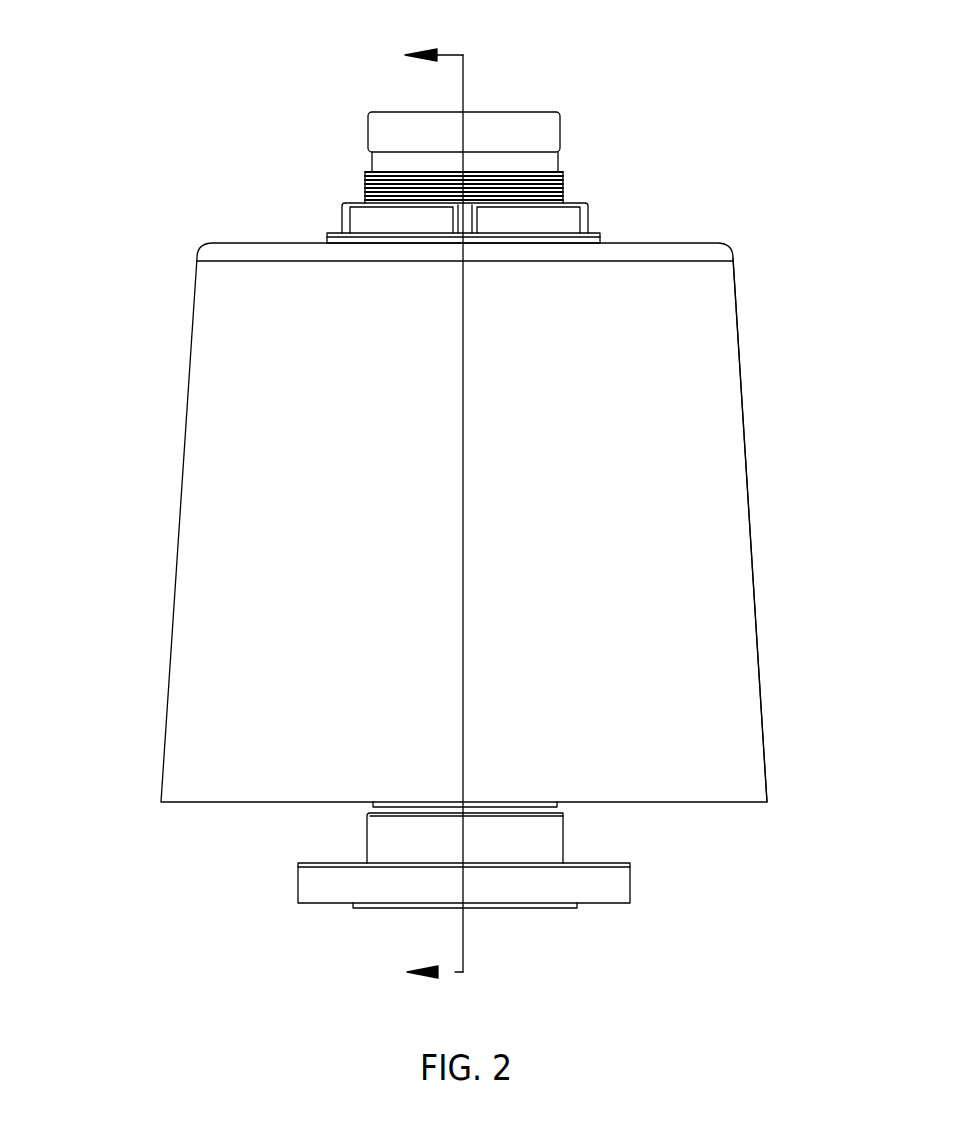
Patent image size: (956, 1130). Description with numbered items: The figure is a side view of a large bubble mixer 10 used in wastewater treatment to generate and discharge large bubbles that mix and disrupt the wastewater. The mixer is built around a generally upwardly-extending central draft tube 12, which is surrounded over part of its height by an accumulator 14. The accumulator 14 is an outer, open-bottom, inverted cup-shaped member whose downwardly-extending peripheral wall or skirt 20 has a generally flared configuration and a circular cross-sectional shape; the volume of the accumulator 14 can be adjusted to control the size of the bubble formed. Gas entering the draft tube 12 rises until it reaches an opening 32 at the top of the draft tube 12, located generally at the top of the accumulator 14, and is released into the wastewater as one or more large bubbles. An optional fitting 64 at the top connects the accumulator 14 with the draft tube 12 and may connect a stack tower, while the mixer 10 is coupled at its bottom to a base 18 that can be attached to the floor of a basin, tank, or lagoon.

The large bubble mixer 10 is at (440, 495).
The draft tube 12 is at (557, 808).
The accumulator 14 is at (766, 530).
The base 18 is at (620, 892).
The skirt 20 is at (762, 707).
The opening 32 is at (485, 108).
The fitting 64 is at (380, 138).